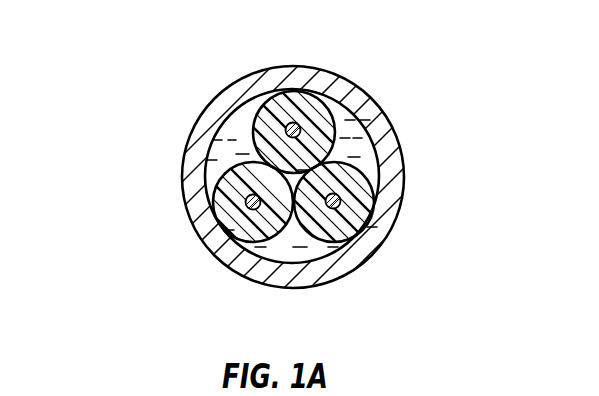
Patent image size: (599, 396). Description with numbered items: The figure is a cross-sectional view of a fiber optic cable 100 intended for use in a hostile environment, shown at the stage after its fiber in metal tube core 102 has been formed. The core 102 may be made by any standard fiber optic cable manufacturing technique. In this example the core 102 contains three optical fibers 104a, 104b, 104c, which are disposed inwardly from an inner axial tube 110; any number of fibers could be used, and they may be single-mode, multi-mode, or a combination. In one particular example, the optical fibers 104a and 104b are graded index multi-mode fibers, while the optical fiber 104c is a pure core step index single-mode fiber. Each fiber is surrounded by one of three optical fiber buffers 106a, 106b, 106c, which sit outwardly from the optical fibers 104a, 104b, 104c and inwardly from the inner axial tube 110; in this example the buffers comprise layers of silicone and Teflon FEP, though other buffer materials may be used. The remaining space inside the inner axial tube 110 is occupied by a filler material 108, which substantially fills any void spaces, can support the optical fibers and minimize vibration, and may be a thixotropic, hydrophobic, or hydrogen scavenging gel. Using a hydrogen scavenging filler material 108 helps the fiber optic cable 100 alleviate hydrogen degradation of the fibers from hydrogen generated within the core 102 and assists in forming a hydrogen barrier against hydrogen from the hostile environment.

The fiber optic cable 100 is at (293, 172).
The fiber in metal tube core 102 is at (418, 172).
The optical fiber 104a is at (341, 202).
The optical fiber 104b is at (246, 206).
The optical fiber 104c is at (297, 124).
The optical fiber buffer 106a is at (314, 174).
The optical fiber buffer 106b is at (195, 165).
The optical fiber buffer 106c is at (293, 152).
The filler material 108 is at (380, 110).
The inner axial tube 110 is at (203, 160).